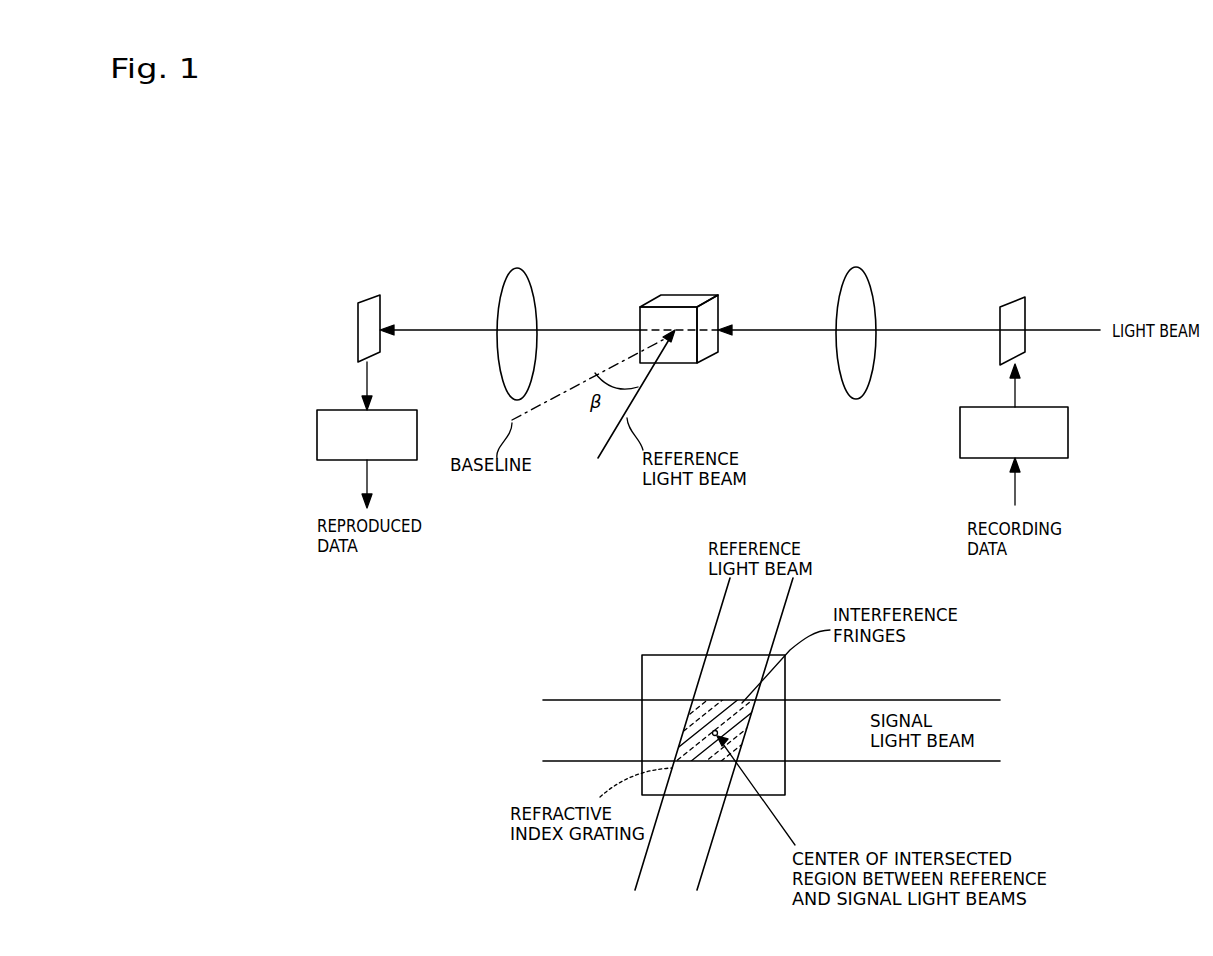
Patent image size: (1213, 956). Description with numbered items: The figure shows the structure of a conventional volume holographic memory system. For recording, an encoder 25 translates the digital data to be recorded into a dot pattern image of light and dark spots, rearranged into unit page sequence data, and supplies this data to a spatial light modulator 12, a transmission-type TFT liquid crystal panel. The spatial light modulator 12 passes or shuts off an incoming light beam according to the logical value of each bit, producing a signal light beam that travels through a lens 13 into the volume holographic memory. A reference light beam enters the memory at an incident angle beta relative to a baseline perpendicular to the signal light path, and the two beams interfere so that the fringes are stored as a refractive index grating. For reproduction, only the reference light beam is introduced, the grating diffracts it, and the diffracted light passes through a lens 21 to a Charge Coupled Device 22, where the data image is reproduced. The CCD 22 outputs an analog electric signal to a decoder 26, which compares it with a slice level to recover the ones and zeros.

The spatial light modulator 12 is at (1010, 305).
The lens 13 is at (857, 268).
The lens 21 is at (520, 278).
The Charge Coupled Device 22 is at (375, 300).
The encoder 25 is at (1068, 423).
The decoder 26 is at (317, 437).